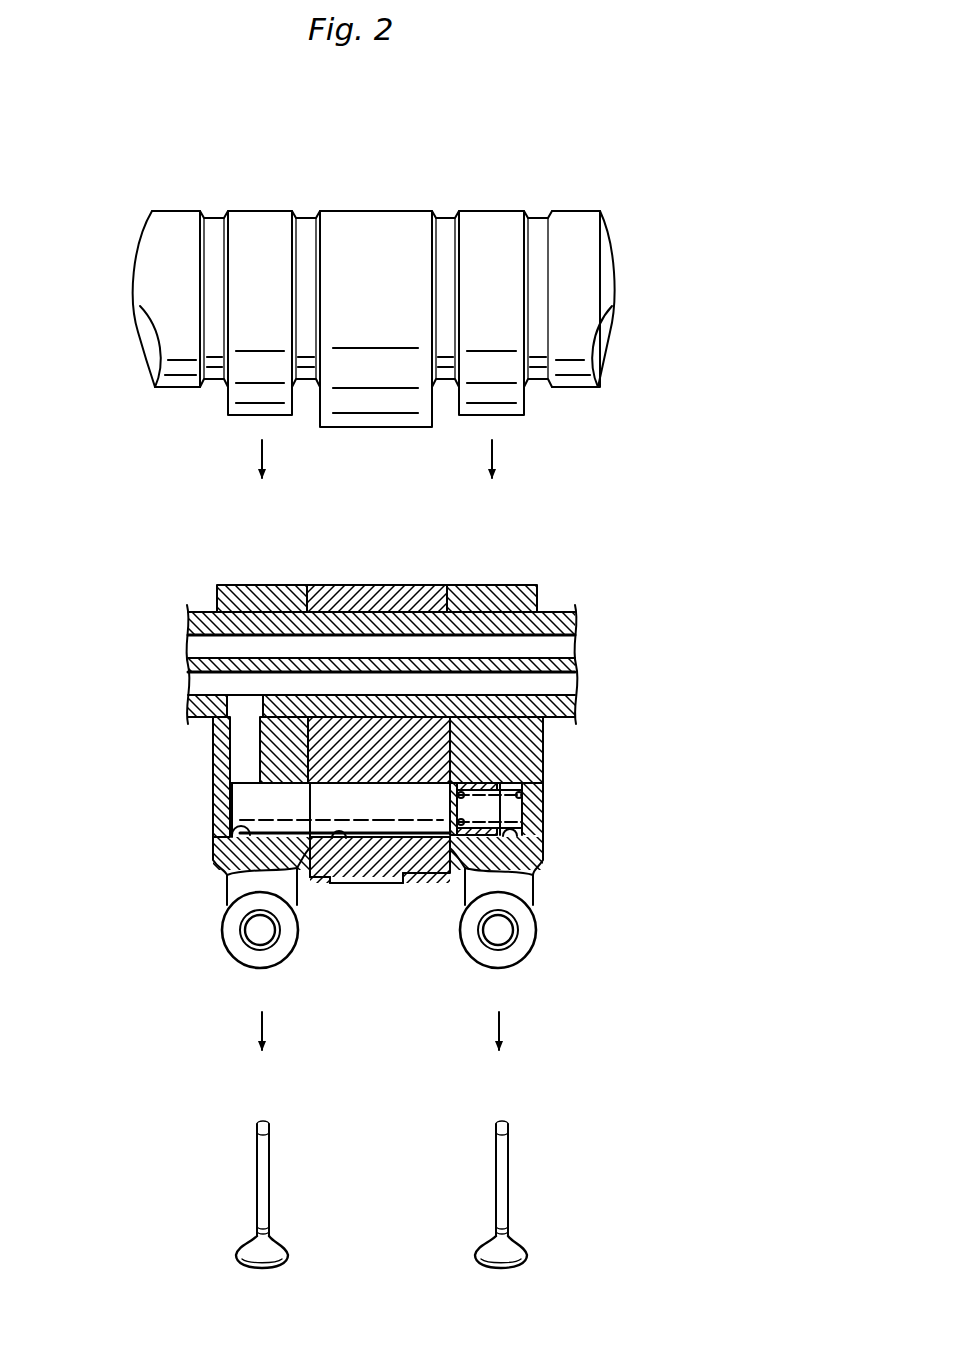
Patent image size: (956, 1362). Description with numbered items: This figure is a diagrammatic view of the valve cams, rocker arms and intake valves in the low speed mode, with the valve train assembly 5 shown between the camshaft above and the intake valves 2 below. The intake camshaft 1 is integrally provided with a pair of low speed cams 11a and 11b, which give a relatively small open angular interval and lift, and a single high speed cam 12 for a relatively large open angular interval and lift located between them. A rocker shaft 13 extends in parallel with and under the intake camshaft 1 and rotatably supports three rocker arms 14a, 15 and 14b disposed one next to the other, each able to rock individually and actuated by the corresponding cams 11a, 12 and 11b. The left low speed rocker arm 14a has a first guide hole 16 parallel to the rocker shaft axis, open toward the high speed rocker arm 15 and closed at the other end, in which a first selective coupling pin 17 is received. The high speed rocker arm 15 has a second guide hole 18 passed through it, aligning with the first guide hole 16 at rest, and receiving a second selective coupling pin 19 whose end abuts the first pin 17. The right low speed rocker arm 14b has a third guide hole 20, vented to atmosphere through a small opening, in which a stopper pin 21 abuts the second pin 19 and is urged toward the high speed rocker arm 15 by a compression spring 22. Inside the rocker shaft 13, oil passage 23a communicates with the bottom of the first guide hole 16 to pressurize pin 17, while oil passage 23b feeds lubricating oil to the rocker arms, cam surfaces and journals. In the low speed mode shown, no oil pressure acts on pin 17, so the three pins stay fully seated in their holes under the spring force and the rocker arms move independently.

The intake camshaft 1 is at (578, 211).
The intake valves 2 is at (262, 1168).
The rocker arm assembly 5 is at (607, 440).
The low speed cam 11a is at (262, 213).
The low speed cam 11b is at (483, 213).
The high speed cam 12 is at (369, 213).
The rocker shaft 13 is at (553, 611).
The low speed rocker arm 14a is at (262, 588).
The low speed rocker arm 14b is at (487, 588).
The high speed rocker arm 15 is at (372, 585).
The first guide hole 16 is at (230, 829).
The first selective coupling pin 17 is at (235, 806).
The second guide hole 18 is at (340, 840).
The second selective coupling pin 19 is at (400, 840).
The third guide hole 20 is at (540, 860).
The stopper pin 21 is at (490, 780).
The compression spring 22 is at (540, 802).
The oil passage 23a is at (190, 688).
The oil passage 23b is at (190, 641).